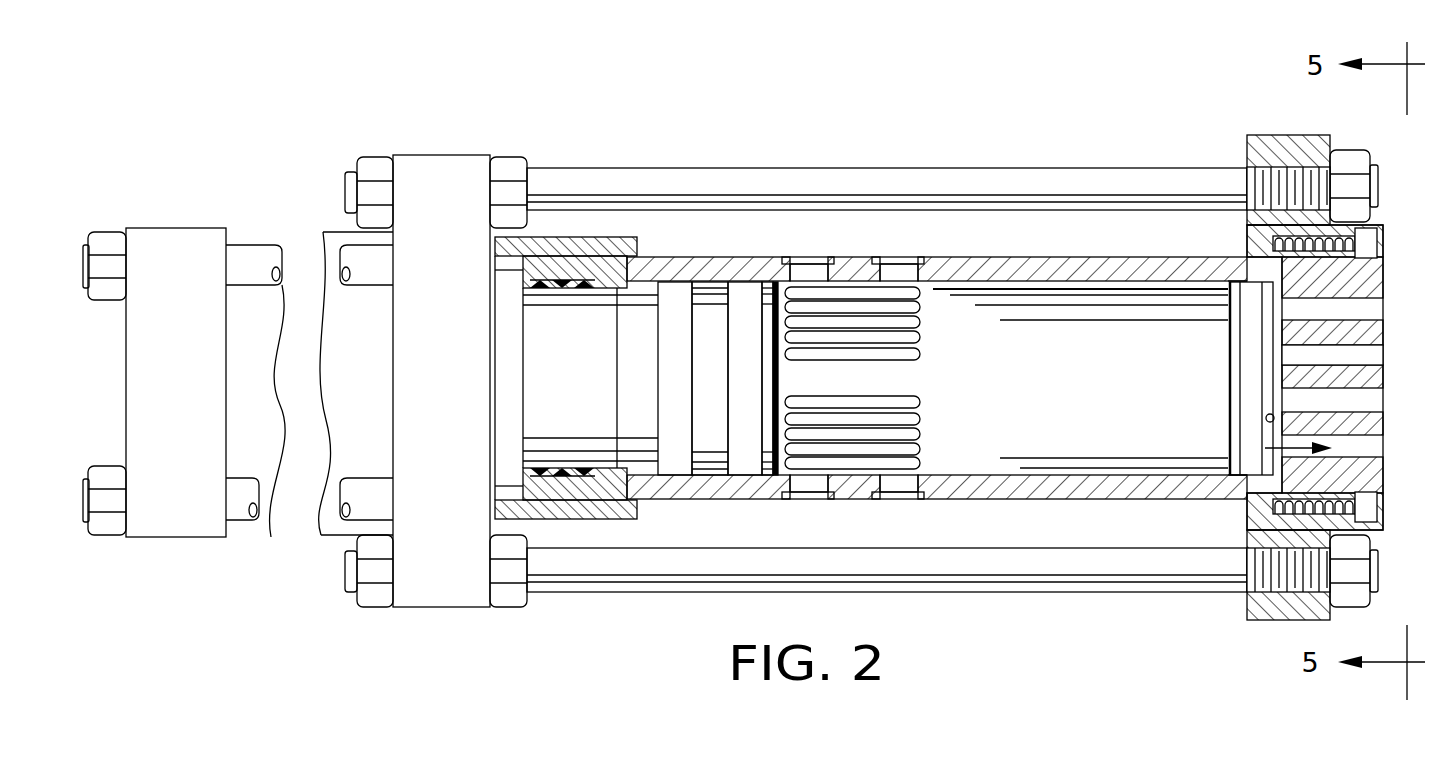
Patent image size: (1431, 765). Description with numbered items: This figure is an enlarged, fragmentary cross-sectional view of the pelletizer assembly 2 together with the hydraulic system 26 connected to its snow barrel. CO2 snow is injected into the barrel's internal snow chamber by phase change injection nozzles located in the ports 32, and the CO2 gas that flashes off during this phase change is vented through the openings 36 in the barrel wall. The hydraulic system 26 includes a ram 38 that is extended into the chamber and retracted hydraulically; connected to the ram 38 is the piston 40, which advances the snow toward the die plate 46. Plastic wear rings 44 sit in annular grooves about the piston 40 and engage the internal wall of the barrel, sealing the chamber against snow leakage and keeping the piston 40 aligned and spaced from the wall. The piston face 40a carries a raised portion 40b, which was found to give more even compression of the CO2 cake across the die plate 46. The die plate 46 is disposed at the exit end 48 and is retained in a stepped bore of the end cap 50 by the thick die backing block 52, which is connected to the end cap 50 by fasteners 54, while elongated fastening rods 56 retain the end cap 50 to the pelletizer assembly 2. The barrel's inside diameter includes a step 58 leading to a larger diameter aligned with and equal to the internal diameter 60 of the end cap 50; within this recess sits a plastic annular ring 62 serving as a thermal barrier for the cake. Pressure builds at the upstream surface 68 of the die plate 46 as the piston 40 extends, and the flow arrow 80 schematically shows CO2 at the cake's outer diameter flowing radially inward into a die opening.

The pelletizer assembly 2 is at (884, 100).
The hydraulic system 26 is at (320, 200).
The ports 32 is at (824, 264).
The openings 36 is at (920, 322).
The ram 38 is at (590, 378).
The piston 40 is at (708, 432).
The piston face 40a is at (770, 270).
The raised portion 40b is at (779, 372).
The wear rings 44 is at (668, 322).
The die plate 46 is at (1300, 356).
The exit end 48 is at (1395, 205).
The end cap 50 is at (1270, 140).
The die backing block 52 is at (1383, 288).
The fasteners 54 is at (1372, 243).
The elongated fastening rods 56 is at (985, 172).
The step 58 is at (1228, 264).
The internal diameter 60 is at (1251, 378).
The annular ring 62 is at (1228, 306).
The upstream surface 68 is at (1256, 390).
The flow arrow 80 is at (1260, 450).